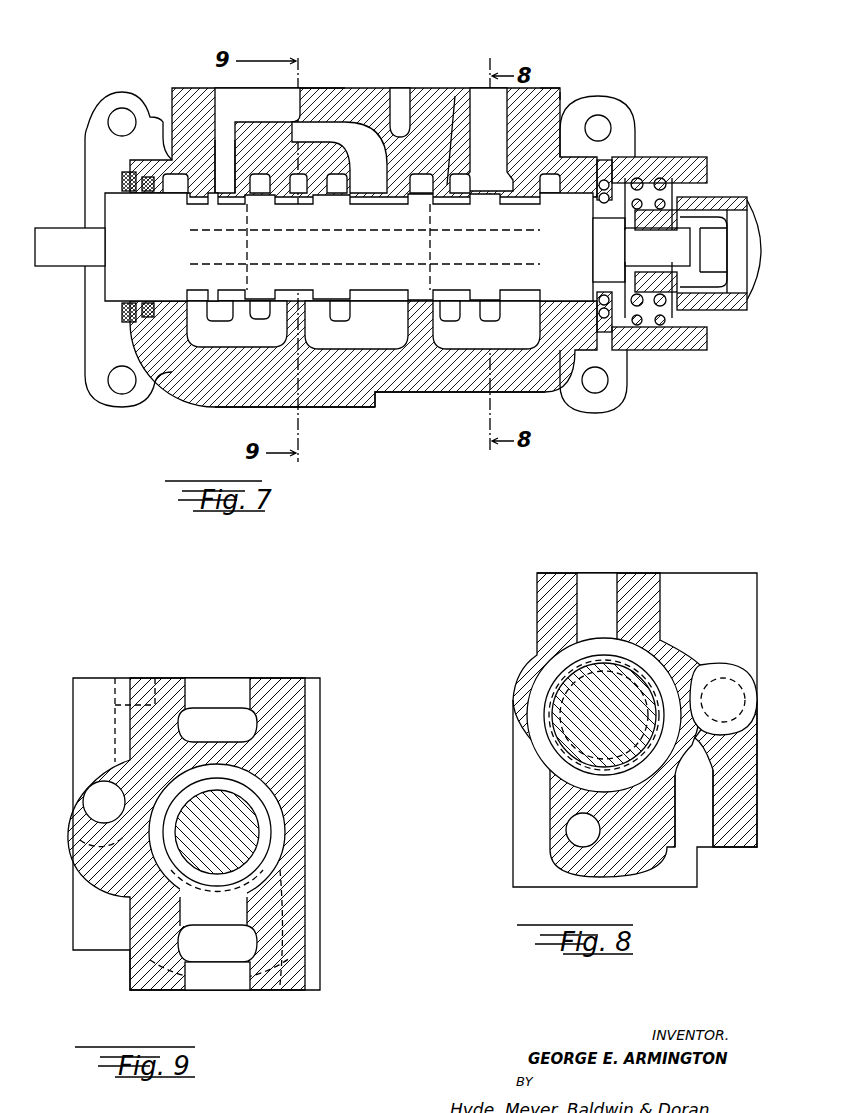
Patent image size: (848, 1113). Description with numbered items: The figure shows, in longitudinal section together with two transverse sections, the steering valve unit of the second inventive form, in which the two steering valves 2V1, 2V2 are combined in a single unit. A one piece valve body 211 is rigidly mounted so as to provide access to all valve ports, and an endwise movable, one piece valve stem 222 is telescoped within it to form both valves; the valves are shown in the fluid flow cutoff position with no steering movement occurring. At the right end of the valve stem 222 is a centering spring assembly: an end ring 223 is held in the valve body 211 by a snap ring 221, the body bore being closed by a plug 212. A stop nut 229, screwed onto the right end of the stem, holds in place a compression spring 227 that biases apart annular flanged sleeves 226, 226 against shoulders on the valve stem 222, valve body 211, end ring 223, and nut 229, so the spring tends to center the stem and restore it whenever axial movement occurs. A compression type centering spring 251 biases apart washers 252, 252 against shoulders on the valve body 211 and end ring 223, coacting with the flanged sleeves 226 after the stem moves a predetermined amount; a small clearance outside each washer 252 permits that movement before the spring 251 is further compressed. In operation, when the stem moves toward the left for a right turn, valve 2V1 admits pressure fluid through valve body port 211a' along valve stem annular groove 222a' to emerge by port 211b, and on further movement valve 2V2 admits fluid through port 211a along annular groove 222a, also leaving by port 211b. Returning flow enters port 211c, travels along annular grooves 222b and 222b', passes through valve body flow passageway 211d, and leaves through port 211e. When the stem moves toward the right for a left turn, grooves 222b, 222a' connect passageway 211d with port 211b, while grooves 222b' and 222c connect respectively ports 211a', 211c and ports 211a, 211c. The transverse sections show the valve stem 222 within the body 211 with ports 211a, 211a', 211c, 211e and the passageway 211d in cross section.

In FIG. 7, the valve body 211 is at (404, 393).
In FIG. 9, the valve body 211 is at (194, 834).
In FIG. 8, the valve body 211 is at (635, 730).
In FIG. 7, the valve body port 211a is at (249, 131).
In FIG. 9, the valve body port 211a is at (217, 699).
In FIG. 7, the valve body port 211a' is at (502, 136).
In FIG. 8, the valve body port 211a' is at (599, 597).
In FIG. 7, the valve body port 211b is at (494, 394).
In FIG. 8, the valve body port 211b is at (705, 848).
In FIG. 7, the valve body port 211c is at (403, 108).
In FIG. 9, the valve body port 211c is at (123, 683).
In FIG. 7, the valve body flow passageway 211d is at (366, 335).
In FIG. 7, the valve body port 211e is at (278, 402).
In FIG. 9, the valve body port 211e is at (224, 975).
In FIG. 7, the plug 212 is at (758, 232).
In FIG. 7, the snap ring 221 is at (706, 177).
In FIG. 7, the valve stem 222 is at (362, 247).
In FIG. 9, the valve stem 222 is at (228, 799).
In FIG. 8, the valve stem 222 is at (610, 692).
In FIG. 7, the valve stem annular groove 222a is at (339, 157).
In FIG. 7, the valve stem annular groove 222a' is at (600, 92).
In FIG. 7, the valve stem annular groove 222b is at (263, 334).
In FIG. 7, the valve stem annular groove 222b' is at (454, 127).
In FIG. 7, the valve stem annular groove 222c is at (233, 170).
In FIG. 7, the end ring 223 is at (727, 197).
In FIG. 7, the annular flanged sleeve 226 is at (600, 182).
In FIG. 7, the compression spring 227 is at (627, 328).
In FIG. 7, the stop nut 229 is at (697, 284).
In FIG. 7, the centering spring 251 is at (636, 178).
In FIG. 7, the washer 252 is at (664, 328).
In FIG. 7, the steering valve 2V1 is at (569, 80).
In FIG. 7, the steering valve 2V2 is at (311, 78).